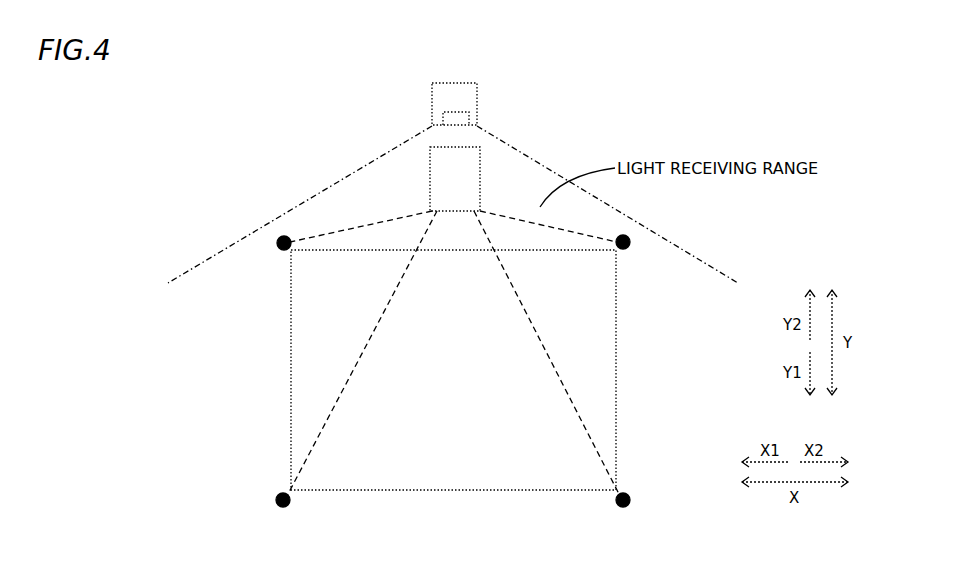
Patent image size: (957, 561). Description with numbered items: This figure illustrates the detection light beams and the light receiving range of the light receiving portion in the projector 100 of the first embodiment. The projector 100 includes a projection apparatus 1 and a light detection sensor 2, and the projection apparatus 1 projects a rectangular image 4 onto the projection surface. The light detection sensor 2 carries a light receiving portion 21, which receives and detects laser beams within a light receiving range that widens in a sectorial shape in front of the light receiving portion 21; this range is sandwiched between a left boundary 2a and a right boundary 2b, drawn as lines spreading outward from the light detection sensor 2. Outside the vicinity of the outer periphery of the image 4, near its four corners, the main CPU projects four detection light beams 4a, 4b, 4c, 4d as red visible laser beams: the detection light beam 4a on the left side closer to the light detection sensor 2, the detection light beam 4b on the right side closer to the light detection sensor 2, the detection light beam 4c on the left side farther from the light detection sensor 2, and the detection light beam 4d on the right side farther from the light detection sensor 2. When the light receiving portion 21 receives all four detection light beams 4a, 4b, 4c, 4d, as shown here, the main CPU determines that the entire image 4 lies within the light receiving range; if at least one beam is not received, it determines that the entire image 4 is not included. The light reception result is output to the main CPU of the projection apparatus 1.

The projector 100 is at (568, 123).
The light detection sensor 2 is at (466, 83).
The light receiving portion 21 is at (478, 116).
The projection apparatus 1 is at (480, 179).
The left boundary 2a is at (312, 197).
The right boundary 2b is at (548, 172).
The image 4 is at (600, 372).
The detection light beam 4a is at (278, 251).
The detection light beam 4b is at (629, 250).
The detection light beam 4c is at (275, 503).
The detection light beam 4d is at (632, 495).